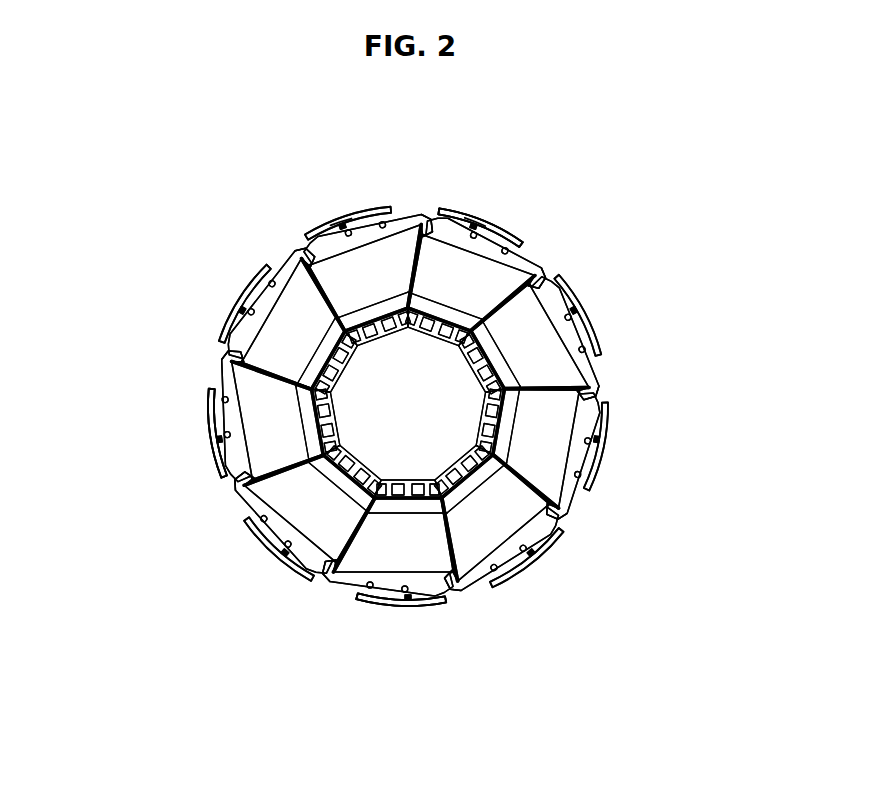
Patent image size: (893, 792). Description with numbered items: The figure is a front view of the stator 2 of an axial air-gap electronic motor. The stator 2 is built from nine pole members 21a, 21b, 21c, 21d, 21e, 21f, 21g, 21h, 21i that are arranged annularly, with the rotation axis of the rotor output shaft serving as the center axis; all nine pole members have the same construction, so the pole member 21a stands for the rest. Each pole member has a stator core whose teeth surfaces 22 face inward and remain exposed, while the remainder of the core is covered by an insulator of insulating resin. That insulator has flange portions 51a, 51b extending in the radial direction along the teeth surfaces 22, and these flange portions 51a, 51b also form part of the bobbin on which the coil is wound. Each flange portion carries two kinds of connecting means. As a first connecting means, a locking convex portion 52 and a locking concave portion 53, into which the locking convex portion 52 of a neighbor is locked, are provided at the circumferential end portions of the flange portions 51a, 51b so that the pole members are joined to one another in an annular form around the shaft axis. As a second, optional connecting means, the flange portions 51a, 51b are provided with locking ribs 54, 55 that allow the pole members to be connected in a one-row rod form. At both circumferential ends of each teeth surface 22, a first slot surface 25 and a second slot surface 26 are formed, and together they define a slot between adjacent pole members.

The stator 2 is at (409, 406).
The pole member 21a is at (503, 200).
The pole member 21b is at (622, 305).
The pole member 21c is at (632, 462).
The pole member 21d is at (553, 598).
The pole member 21e is at (392, 632).
The pole member 21f is at (258, 572).
The pole member 21g is at (188, 437).
The pole member 21h is at (238, 300).
The pole member 21i is at (358, 205).
The teeth surface 22 is at (475, 270).
The first slot surface 25 is at (340, 222).
The second slot surface 26 is at (420, 248).
The flange portion 51a is at (400, 220).
The flange portion 51b is at (341, 452).
The locking convex portion 52 is at (330, 235).
The locking concave portion 53 is at (363, 405).
The locking rib 54 is at (481, 212).
The locking rib 55 is at (427, 349).